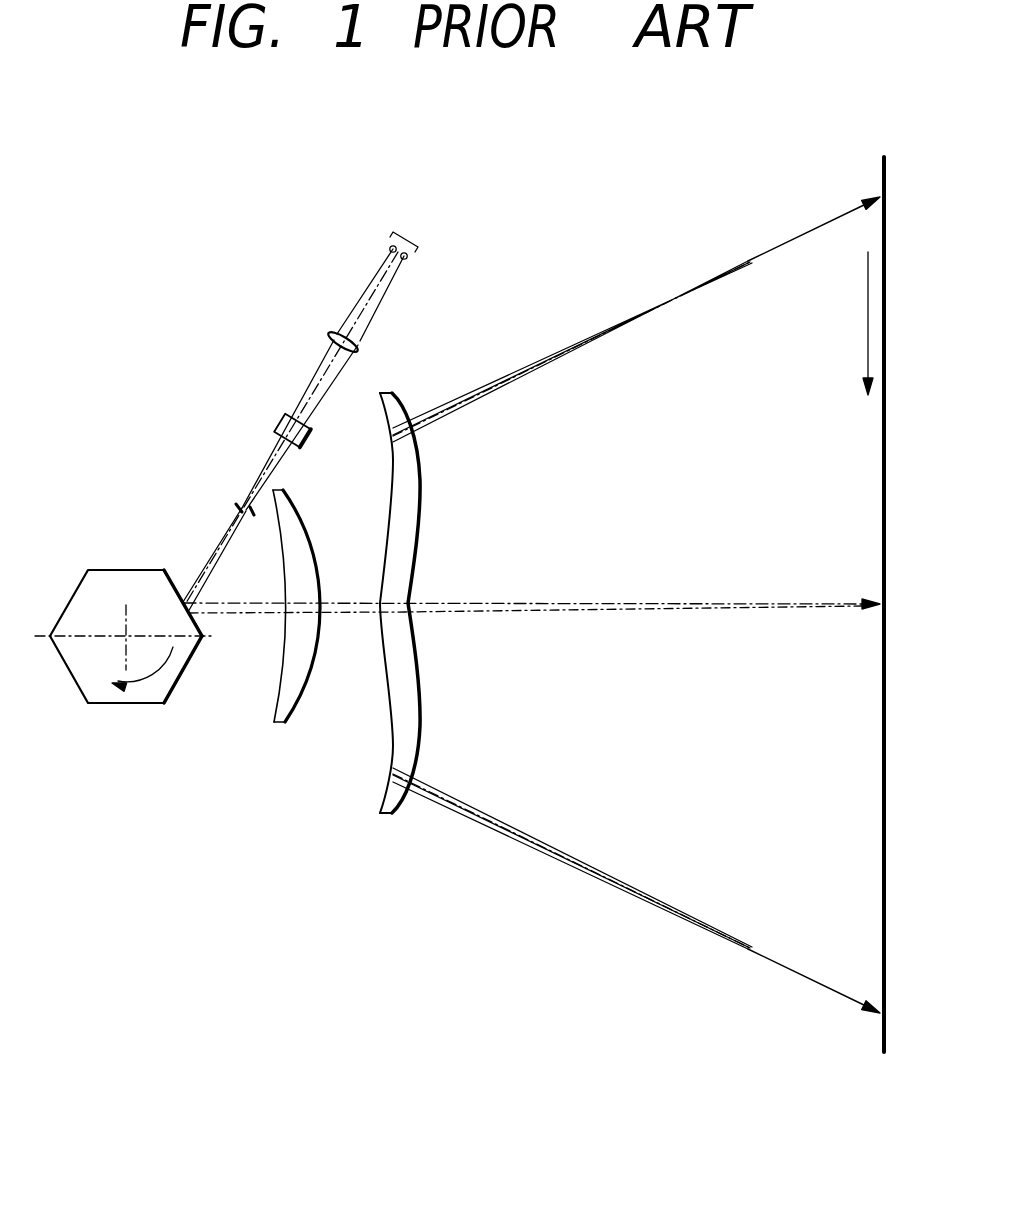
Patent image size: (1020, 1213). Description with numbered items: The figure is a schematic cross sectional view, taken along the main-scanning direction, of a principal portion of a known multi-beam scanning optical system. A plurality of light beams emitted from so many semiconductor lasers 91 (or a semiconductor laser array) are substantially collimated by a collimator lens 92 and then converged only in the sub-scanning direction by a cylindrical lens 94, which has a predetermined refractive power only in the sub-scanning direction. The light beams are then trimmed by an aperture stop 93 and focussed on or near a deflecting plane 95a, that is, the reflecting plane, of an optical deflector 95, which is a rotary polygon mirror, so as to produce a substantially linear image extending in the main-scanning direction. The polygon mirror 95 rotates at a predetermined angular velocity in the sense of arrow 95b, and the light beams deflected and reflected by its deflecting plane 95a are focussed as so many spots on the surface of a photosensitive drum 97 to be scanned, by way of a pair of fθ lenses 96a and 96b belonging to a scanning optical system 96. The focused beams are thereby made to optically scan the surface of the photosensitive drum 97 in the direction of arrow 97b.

The semiconductor lasers 91 is at (410, 238).
The collimator lens 92 is at (335, 335).
The aperture stop 93 is at (240, 506).
The cylindrical lens 94 is at (282, 422).
The optical deflector 95 is at (108, 570).
The deflecting plane 95a is at (173, 579).
The arrow 95b is at (150, 684).
The scanning optical system 96 is at (338, 617).
The fθ lens 96a is at (277, 727).
The fθ lens 96b is at (368, 603).
The photosensitive drum 97 is at (883, 177).
The arrow 97b is at (867, 305).